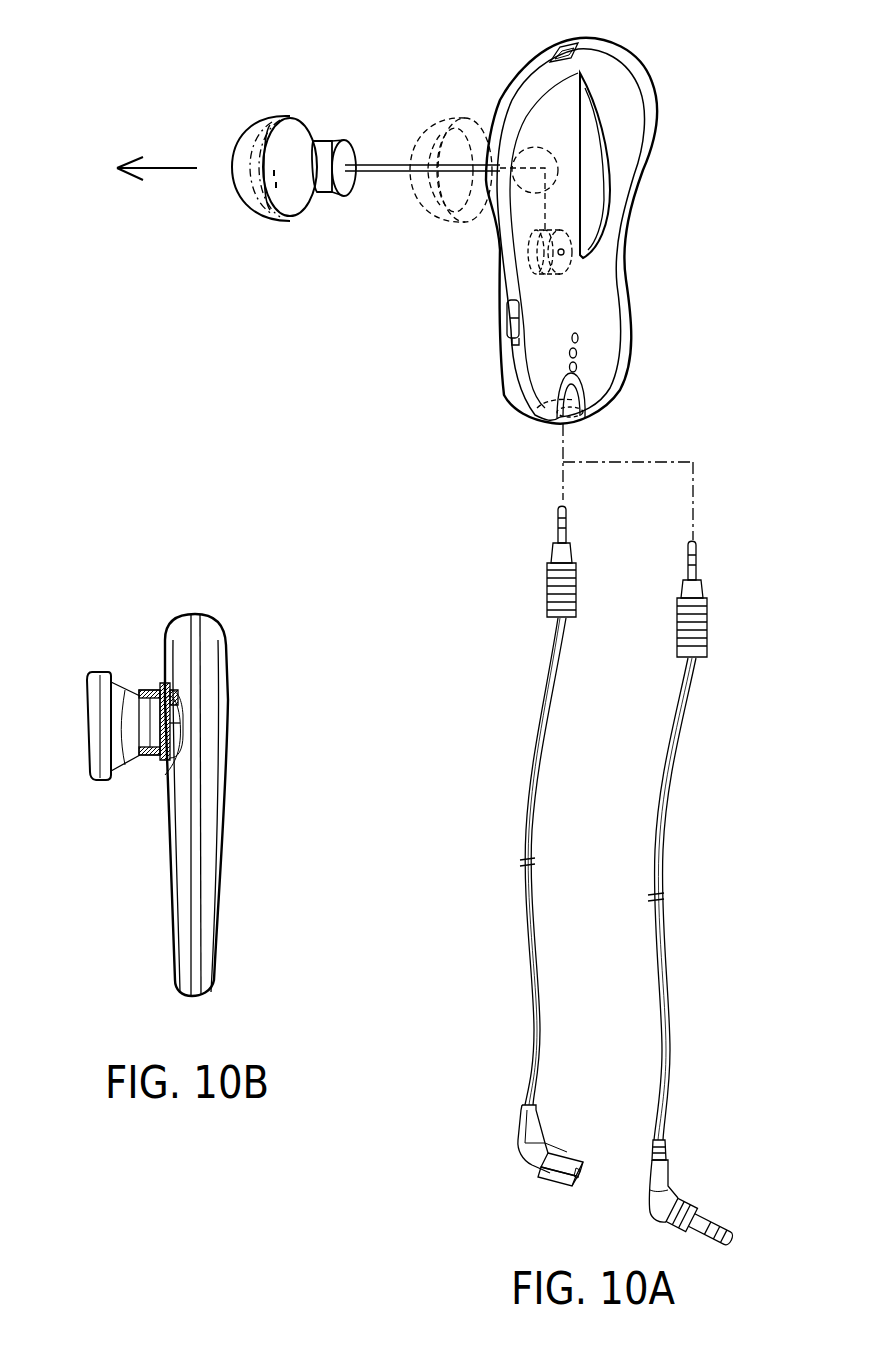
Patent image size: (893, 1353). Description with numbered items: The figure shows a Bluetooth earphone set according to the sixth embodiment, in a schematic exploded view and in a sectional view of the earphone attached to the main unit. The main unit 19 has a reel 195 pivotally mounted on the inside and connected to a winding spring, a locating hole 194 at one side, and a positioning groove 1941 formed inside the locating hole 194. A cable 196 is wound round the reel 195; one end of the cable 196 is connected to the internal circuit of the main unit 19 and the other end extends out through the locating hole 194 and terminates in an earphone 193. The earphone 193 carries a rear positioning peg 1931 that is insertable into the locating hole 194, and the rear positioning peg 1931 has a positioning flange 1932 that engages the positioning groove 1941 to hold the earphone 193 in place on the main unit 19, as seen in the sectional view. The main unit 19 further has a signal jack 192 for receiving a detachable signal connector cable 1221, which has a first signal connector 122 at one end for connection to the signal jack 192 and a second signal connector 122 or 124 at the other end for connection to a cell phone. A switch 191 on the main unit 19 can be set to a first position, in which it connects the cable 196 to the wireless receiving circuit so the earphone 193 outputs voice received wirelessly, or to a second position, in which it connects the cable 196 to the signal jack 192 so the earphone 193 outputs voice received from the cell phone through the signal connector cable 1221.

In FIG. 10A, the main unit 19 is at (627, 113).
In FIG. 10B, the main unit 19 is at (181, 628).
In FIG. 10A, the switch 191 is at (508, 313).
In FIG. 10A, the signal jack 192 is at (530, 405).
In FIG. 10A, the earphone 193 is at (448, 115).
In FIG. 10B, the earphone 193 is at (108, 782).
In FIG. 10A, the rear positioning peg 1931 is at (323, 188).
In FIG. 10B, the rear positioning peg 1931 is at (148, 762).
In FIG. 10A, the positioning flange 1932 is at (338, 142).
In FIG. 10B, the positioning flange 1932 is at (160, 790).
In FIG. 10A, the locating hole 194 is at (512, 125).
In FIG. 10B, the locating hole 194 is at (116, 700).
In FIG. 10B, the positioning groove 1941 is at (166, 706).
In FIG. 10A, the reel 195 is at (573, 268).
In FIG. 10A, the cable 196 is at (447, 227).
In FIG. 10A, the signal connector 122 is at (560, 605).
In FIG. 10A, the signal connector cable 1221 is at (528, 825).
In FIG. 10A, the second signal connector 124 is at (528, 1148).